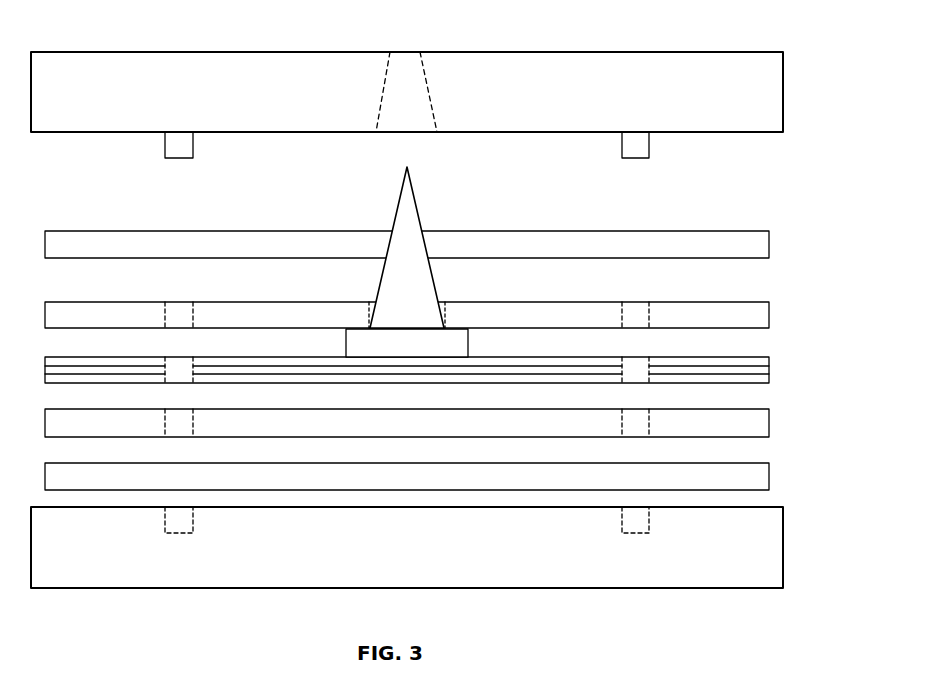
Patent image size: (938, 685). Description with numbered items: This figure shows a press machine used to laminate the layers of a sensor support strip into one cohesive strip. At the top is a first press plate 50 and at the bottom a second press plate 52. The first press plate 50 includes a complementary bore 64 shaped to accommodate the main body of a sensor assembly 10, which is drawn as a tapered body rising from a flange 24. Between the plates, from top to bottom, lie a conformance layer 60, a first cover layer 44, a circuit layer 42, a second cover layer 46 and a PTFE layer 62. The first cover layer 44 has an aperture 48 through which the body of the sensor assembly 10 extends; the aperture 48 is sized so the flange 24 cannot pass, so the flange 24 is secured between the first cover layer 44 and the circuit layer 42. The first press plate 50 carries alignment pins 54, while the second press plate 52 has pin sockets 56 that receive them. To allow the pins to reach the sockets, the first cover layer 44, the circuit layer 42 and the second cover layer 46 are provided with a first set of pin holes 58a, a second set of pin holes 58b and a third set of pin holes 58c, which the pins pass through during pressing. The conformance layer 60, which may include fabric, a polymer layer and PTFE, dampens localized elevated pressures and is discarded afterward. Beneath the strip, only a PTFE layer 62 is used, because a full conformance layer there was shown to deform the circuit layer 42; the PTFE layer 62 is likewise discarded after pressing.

The sensor assembly 10 is at (426, 202).
The flange 24 is at (346, 332).
The circuit layer 42 is at (770, 370).
The first cover layer 44 is at (770, 316).
The second cover layer 46 is at (770, 423).
The aperture 48 is at (442, 292).
The first press plate 50 is at (784, 93).
The second press plate 52 is at (784, 545).
The alignment pin 54 is at (165, 146).
The pin socket 56 is at (165, 526).
The first set of pin holes 58a is at (165, 312).
The second set of pin holes 58b is at (165, 370).
The third set of pin holes 58c is at (165, 420).
The conformance layer 60 is at (721, 231).
The PTFE layer 62 is at (770, 476).
The complementary bore 64 is at (428, 78).